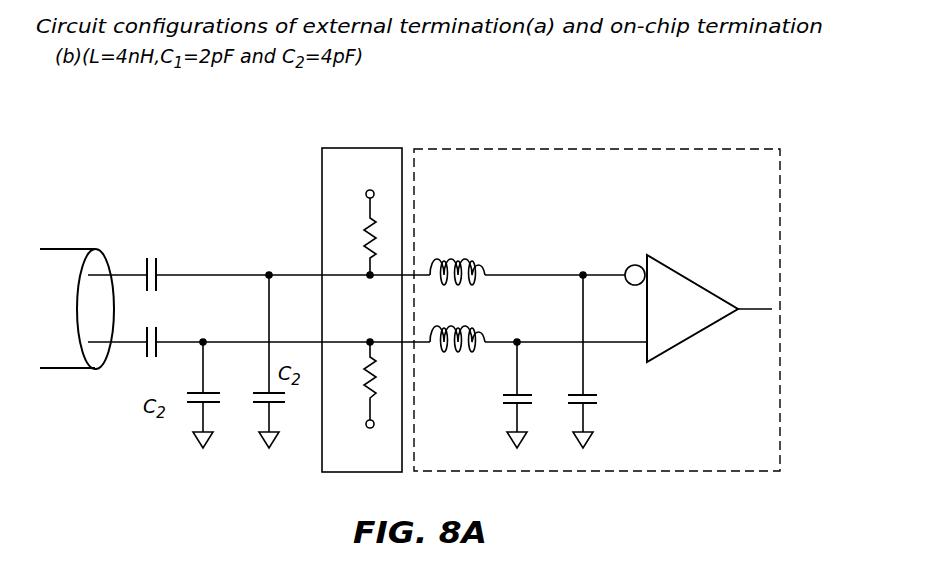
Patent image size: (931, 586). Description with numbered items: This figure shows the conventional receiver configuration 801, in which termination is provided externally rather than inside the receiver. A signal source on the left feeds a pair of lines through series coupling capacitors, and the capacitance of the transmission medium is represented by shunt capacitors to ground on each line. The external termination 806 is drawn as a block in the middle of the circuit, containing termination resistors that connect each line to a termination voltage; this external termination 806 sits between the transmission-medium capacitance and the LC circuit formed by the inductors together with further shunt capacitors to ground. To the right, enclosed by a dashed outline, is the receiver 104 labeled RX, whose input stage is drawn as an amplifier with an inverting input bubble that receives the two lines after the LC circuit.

The conventional receiver configuration 801 is at (107, 201).
The external termination 806 is at (322, 183).
The receiver 104 is at (755, 202).